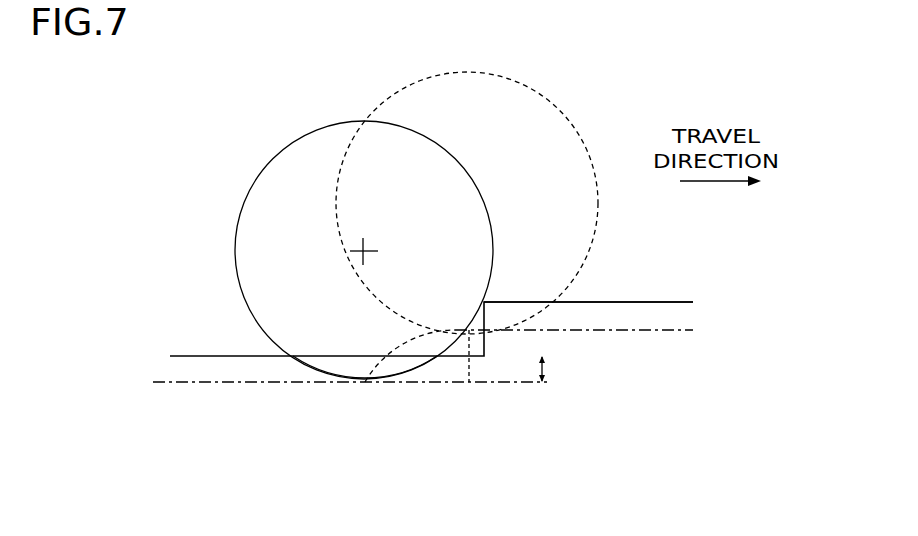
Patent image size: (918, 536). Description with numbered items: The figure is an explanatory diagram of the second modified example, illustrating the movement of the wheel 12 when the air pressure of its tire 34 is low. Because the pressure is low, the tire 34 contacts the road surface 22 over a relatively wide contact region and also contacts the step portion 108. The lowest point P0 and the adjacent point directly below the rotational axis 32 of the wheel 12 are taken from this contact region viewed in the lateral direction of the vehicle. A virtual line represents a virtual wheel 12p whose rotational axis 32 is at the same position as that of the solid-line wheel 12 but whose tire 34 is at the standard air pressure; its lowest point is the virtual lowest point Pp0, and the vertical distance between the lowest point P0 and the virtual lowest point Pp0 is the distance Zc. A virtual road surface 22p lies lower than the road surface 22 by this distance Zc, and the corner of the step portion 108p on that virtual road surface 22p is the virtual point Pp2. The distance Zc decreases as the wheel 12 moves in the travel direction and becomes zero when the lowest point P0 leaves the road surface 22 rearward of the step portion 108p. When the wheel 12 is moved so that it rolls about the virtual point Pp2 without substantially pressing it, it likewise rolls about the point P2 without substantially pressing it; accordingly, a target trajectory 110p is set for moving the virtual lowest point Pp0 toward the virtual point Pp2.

The wheel 12 is at (449, 150).
The tire 34 is at (272, 160).
The rotational axis 32 is at (366, 247).
The road surface 22 is at (217, 355).
The step portion 108 is at (500, 310).
The virtual road surface 22p is at (168, 382).
The step portion (virtual) 108p is at (477, 350).
The target trajectory 110p is at (414, 345).
The virtual wheel 12p is at (300, 378).
The virtual lowest point Pp0 is at (365, 382).
The lowest point P0 is at (364, 356).
The virtual point Pp2 is at (466, 328).
The point P2 is at (468, 328).
The vertical distance Zc is at (556, 370).